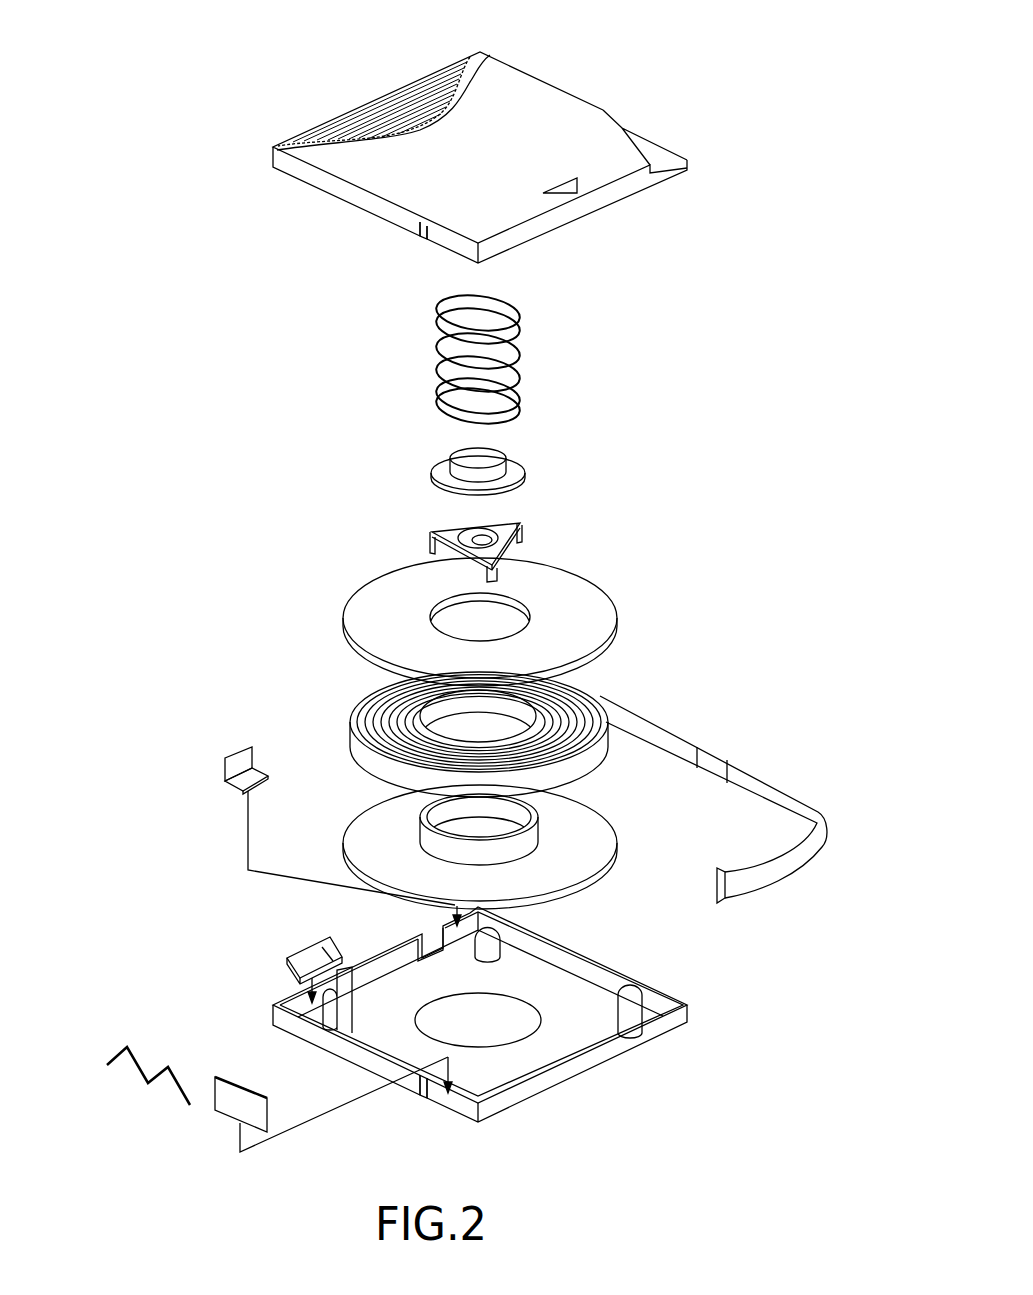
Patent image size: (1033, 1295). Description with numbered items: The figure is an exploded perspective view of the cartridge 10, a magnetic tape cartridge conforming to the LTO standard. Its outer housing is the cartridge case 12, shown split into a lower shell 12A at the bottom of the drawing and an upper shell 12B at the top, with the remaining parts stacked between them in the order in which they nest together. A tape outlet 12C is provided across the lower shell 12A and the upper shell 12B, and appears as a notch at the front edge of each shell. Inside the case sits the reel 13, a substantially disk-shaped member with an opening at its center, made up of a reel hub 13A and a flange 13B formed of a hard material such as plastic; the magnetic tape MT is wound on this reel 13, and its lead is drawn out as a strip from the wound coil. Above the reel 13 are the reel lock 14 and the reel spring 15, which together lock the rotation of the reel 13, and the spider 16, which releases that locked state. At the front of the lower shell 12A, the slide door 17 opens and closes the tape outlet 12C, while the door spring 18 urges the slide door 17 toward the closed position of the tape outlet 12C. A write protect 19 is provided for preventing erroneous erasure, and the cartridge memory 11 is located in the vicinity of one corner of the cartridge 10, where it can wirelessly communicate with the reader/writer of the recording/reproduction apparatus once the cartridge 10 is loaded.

The cartridge 10 is at (672, 48).
The cartridge memory 11 is at (310, 947).
The cartridge case 12 is at (85, 567).
The lower shell 12A is at (273, 1018).
The upper shell 12B is at (323, 192).
The tape outlet 12C is at (430, 238).
The reel 13 is at (252, 628).
The reel hub 13A is at (352, 818).
The flange 13B is at (345, 640).
The reel lock 14 is at (527, 472).
The reel spring 15 is at (520, 348).
The spider 16 is at (523, 521).
The slide door 17 is at (238, 1122).
The door spring 18 is at (142, 1077).
The write protect 19 is at (240, 753).
The magnetic tape MT is at (597, 762).